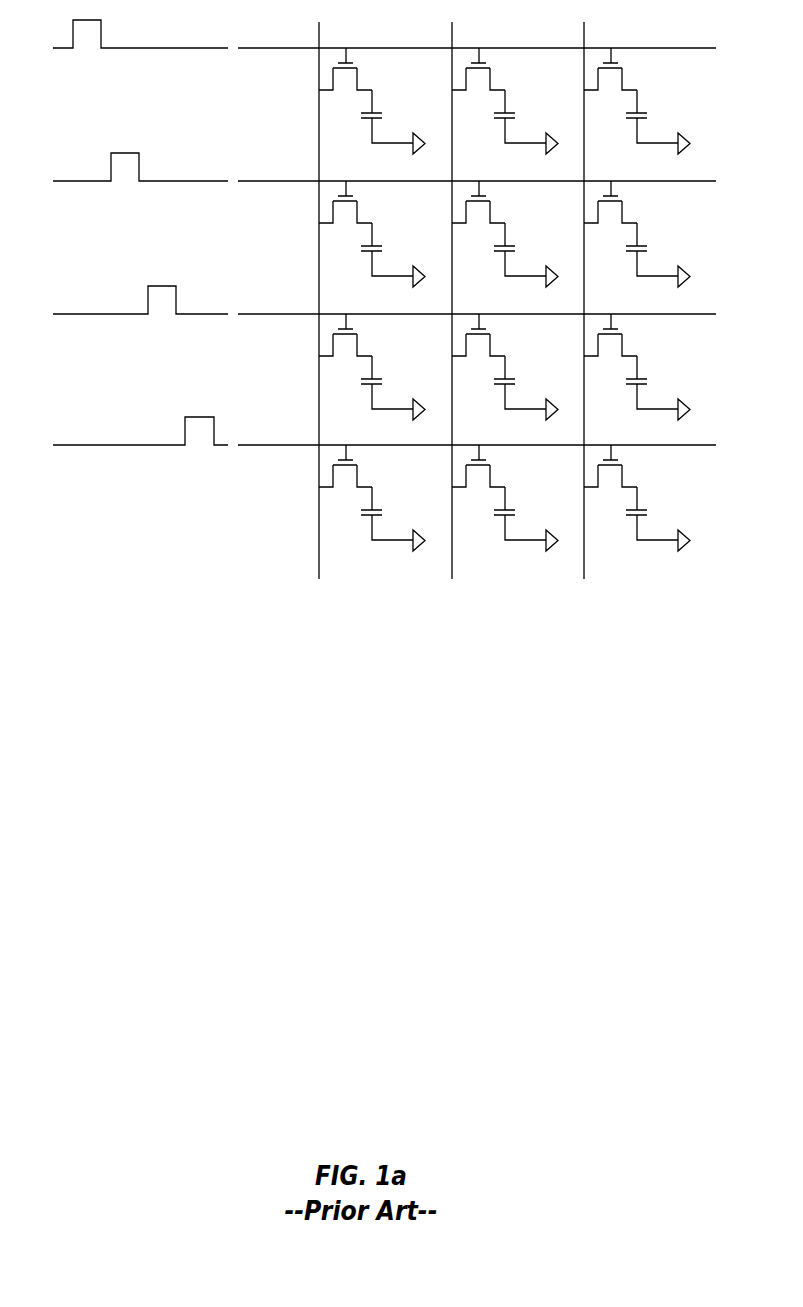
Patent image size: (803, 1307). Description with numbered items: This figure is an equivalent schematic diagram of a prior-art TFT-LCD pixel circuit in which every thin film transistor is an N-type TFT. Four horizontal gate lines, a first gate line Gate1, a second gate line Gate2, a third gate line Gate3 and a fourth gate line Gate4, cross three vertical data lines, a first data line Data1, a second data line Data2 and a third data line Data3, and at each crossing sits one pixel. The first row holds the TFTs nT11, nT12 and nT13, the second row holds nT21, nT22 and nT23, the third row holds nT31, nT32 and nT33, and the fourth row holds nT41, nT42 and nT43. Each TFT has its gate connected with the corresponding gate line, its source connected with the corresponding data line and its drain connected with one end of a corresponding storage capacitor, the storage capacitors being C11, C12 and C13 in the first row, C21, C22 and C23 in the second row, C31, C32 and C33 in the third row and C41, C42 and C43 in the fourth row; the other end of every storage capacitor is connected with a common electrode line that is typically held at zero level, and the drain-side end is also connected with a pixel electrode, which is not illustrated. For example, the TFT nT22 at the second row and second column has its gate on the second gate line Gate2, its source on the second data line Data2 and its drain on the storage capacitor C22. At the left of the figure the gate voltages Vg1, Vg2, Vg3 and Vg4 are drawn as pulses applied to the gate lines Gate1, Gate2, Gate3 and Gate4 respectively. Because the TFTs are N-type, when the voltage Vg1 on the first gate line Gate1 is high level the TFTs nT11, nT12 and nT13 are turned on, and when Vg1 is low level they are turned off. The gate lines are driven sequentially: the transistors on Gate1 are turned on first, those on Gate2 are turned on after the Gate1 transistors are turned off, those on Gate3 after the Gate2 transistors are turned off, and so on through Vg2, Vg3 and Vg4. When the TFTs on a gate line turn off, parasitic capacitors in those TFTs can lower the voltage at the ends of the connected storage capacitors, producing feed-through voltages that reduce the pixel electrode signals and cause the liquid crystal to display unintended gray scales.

The voltage on first gate line Vg1 is at (120, 37).
The voltage on second gate line Vg2 is at (120, 170).
The voltage on third gate line Vg3 is at (120, 303).
The voltage on fourth gate line Vg4 is at (120, 434).
The first gate line Gate1 is at (477, 61).
The second gate line Gate2 is at (477, 195).
The third gate line Gate3 is at (477, 328).
The fourth gate line Gate4 is at (477, 458).
The first data line Data1 is at (318, 290).
The second data line Data2 is at (451, 290).
The third data line Data3 is at (583, 290).
The N-type TFT nT11 is at (358, 69).
The N-type TFT nT12 is at (491, 69).
The N-type TFT nT13 is at (623, 69).
The N-type TFT nT21 is at (358, 202).
The N-type TFT nT22 is at (491, 202).
The N-type TFT nT23 is at (623, 202).
The N-type TFT nT31 is at (358, 335).
The N-type TFT nT32 is at (491, 335).
The N-type TFT nT33 is at (623, 335).
The N-type TFT nT41 is at (358, 466).
The N-type TFT nT42 is at (491, 466).
The N-type TFT nT43 is at (623, 466).
The storage capacitor C11 is at (393, 122).
The storage capacitor C12 is at (526, 122).
The storage capacitor C13 is at (658, 122).
The storage capacitor C21 is at (393, 255).
The storage capacitor C22 is at (526, 255).
The storage capacitor C23 is at (658, 255).
The storage capacitor C31 is at (393, 388).
The storage capacitor C32 is at (526, 388).
The storage capacitor C33 is at (658, 388).
The storage capacitor C41 is at (393, 519).
The storage capacitor C42 is at (526, 519).
The storage capacitor C43 is at (658, 519).